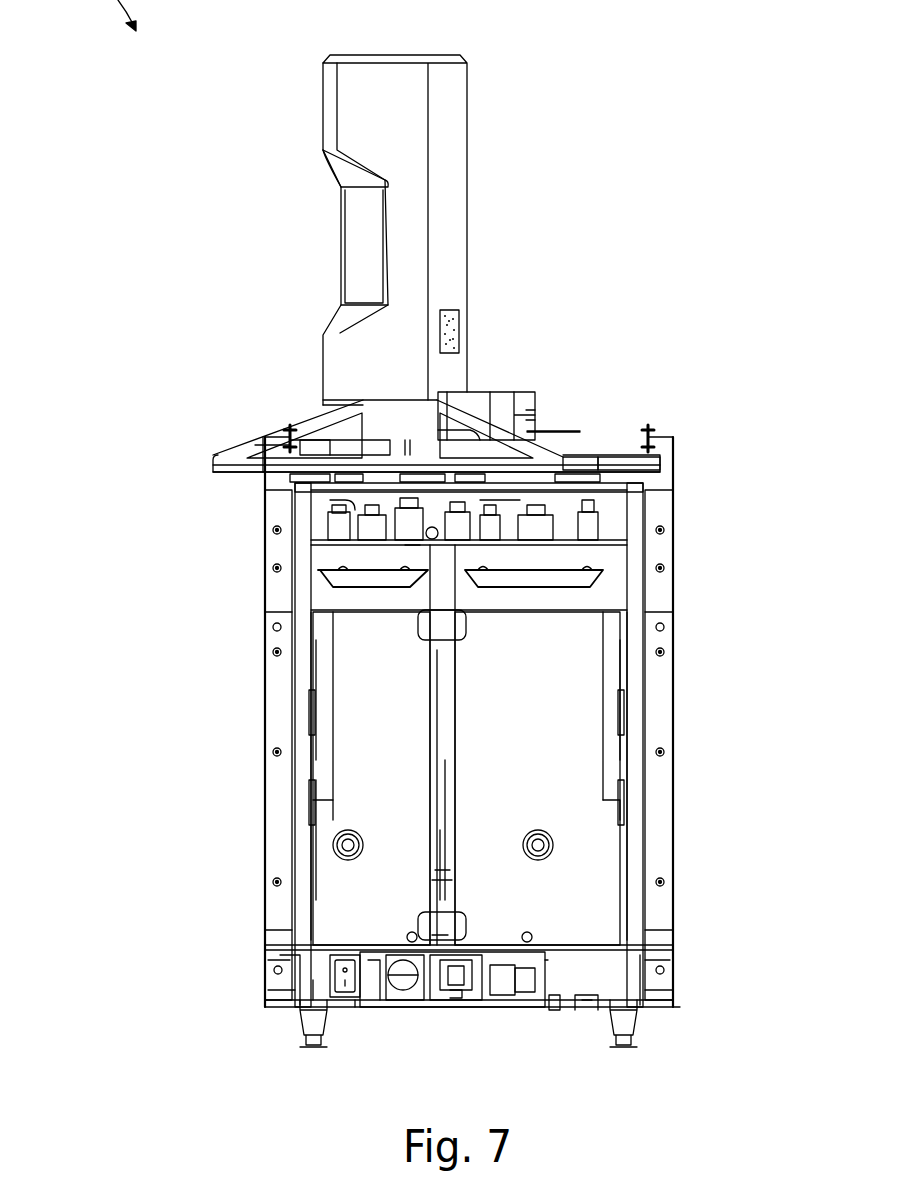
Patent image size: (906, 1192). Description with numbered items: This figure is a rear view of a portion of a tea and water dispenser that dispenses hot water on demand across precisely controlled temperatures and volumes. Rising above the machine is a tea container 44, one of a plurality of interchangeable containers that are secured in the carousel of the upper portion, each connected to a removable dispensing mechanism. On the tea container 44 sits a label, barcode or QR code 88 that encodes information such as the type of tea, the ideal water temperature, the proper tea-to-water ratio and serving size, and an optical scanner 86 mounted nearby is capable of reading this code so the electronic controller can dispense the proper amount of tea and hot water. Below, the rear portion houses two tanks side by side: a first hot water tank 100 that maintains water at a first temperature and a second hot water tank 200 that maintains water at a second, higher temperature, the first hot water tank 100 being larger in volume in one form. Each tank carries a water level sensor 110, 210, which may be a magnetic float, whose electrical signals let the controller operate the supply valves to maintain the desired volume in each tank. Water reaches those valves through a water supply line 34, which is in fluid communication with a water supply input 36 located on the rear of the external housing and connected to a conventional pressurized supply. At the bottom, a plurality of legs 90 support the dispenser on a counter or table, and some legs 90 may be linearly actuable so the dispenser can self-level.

The tea container 44 is at (343, 88).
The QR code 88 is at (457, 330).
The optical scanner 86 is at (500, 400).
The water level sensor 210 is at (355, 686).
The water level sensor 110 is at (605, 690).
The second hot water tank 200 is at (370, 805).
The first hot water tank 100 is at (595, 868).
The legs 90 is at (307, 1030).
The water supply input 36 is at (440, 978).
The water supply line 34 is at (465, 985).